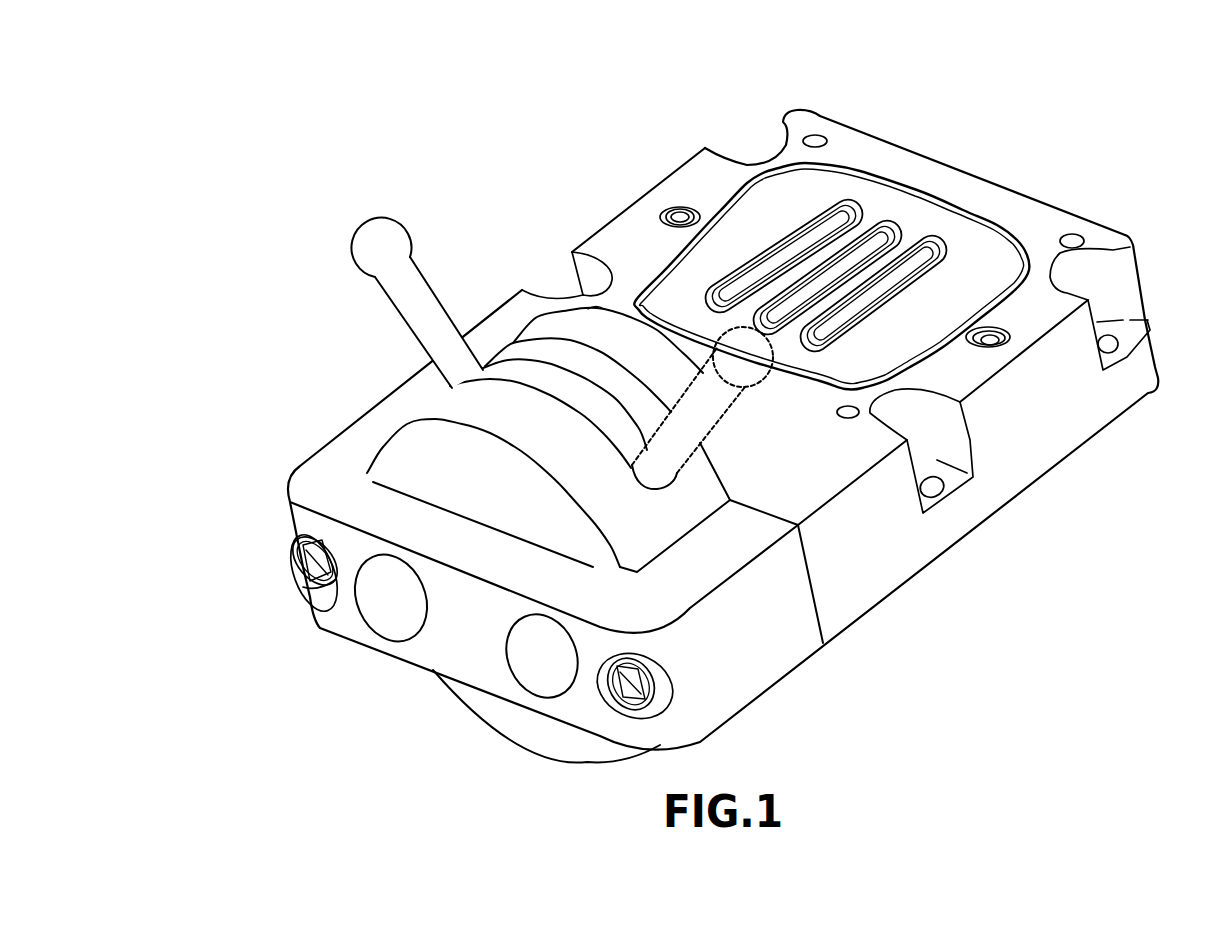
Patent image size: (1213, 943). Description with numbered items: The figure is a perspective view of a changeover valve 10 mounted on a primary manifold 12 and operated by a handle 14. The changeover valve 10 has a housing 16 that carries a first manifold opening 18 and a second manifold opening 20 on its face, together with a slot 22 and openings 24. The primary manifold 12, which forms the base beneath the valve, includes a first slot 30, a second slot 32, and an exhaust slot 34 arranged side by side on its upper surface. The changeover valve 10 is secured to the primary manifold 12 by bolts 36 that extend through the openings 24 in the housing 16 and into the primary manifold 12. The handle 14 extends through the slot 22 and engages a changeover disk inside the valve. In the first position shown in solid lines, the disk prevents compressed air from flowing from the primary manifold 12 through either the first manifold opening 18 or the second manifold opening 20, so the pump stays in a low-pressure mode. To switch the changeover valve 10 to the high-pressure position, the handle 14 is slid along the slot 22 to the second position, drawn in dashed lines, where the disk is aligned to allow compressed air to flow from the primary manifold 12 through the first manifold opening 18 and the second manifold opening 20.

The changeover valve 10 is at (293, 377).
The primary manifold 12 is at (613, 107).
The handle 14 is at (385, 238).
The housing 16 is at (767, 635).
The first manifold opening 18 is at (548, 670).
The second manifold opening 20 is at (400, 613).
The slot 22 is at (548, 387).
The openings 24 is at (322, 600).
The first slot 30 is at (927, 255).
The second slot 32 is at (820, 228).
The exhaust slot 34 is at (870, 250).
The bolts 36 is at (303, 562).